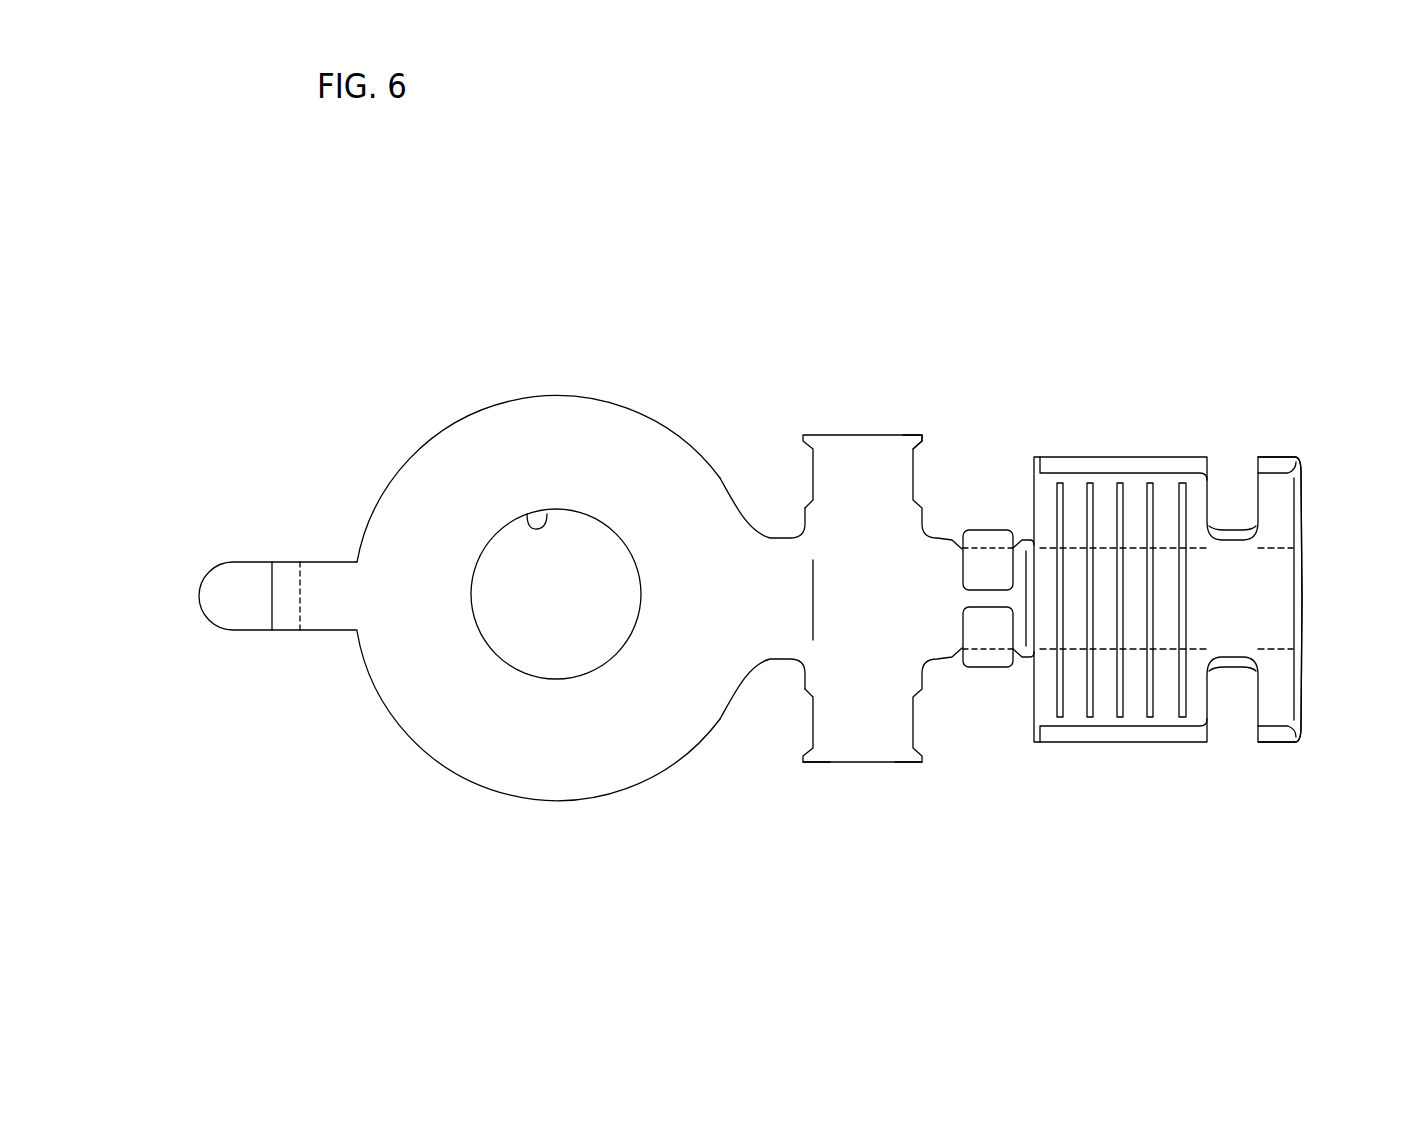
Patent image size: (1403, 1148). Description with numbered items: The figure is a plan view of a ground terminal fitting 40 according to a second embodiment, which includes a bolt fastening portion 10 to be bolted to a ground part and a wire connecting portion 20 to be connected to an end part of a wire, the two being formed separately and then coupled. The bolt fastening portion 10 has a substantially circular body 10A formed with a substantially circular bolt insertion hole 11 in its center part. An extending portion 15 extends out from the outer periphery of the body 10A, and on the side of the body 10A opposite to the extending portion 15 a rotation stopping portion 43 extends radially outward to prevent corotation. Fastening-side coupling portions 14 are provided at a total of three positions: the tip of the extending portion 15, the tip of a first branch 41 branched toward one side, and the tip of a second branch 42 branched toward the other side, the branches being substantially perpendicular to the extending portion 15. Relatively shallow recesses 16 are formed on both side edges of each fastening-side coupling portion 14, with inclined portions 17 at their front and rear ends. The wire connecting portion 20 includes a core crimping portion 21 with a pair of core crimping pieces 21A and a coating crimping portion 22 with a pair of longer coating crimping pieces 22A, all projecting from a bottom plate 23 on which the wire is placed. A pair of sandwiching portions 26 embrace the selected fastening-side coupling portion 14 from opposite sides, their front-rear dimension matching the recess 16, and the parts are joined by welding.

The ground terminal fitting 40 is at (702, 238).
The bolt fastening portion 10 is at (538, 595).
The body 10A is at (551, 774).
The bolt insertion hole 11 is at (555, 513).
The rotation stopping portion 43 is at (245, 578).
The first branch 41 is at (831, 489).
The second branch 42 is at (830, 707).
The fastening-side coupling portion 14 is at (943, 603).
The extending portion 15 is at (860, 612).
The recess 16 is at (813, 728).
The inclined portion 17 is at (932, 442).
The sandwiching portion 26 is at (983, 568).
The wire connecting portion 20 is at (1191, 587).
The core crimping portion 21 is at (1140, 578).
The core crimping piece 21A is at (1085, 465).
The coating crimping portion 22 is at (1300, 570).
The coating crimping piece 22A is at (1278, 483).
The bottom plate 23 is at (1163, 592).